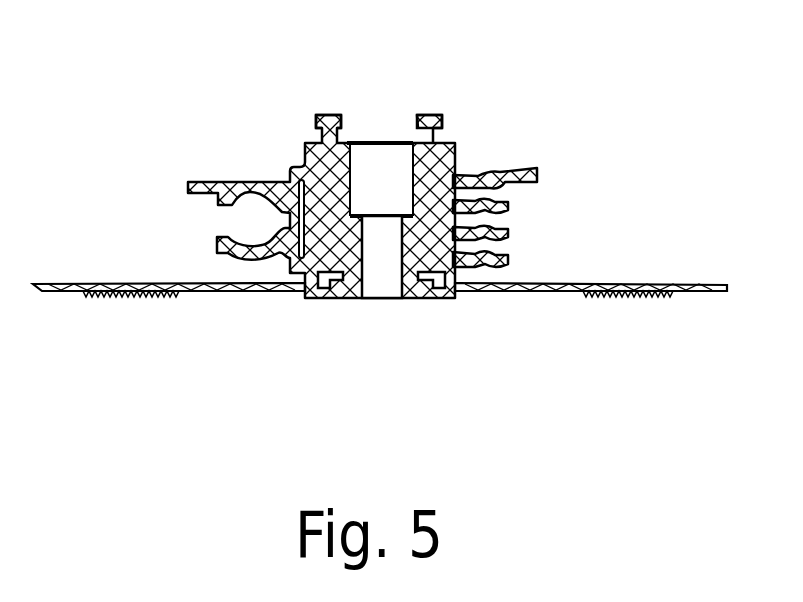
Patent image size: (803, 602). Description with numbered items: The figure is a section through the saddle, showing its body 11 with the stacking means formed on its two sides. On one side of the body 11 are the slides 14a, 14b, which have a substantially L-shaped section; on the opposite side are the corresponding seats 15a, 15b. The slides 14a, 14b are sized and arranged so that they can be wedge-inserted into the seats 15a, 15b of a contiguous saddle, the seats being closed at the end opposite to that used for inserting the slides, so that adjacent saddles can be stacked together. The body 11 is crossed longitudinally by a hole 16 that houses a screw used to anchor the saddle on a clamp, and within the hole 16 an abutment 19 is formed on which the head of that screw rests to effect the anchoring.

The body 11 is at (440, 172).
The slide 14a is at (325, 118).
The slide 14b is at (428, 120).
The seat 15a is at (335, 283).
The seat 15b is at (427, 285).
The hole 16 is at (382, 283).
The abutment 19 is at (351, 143).